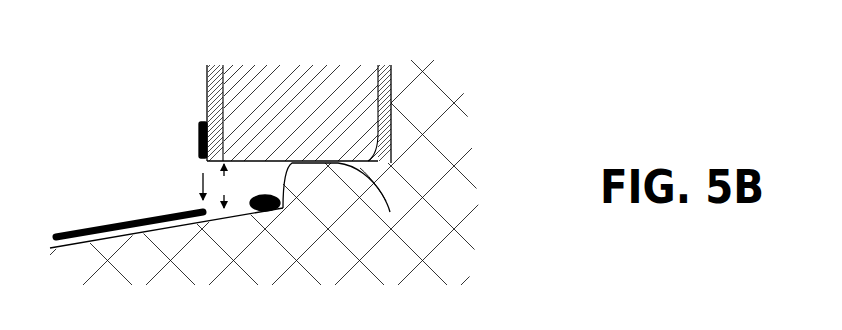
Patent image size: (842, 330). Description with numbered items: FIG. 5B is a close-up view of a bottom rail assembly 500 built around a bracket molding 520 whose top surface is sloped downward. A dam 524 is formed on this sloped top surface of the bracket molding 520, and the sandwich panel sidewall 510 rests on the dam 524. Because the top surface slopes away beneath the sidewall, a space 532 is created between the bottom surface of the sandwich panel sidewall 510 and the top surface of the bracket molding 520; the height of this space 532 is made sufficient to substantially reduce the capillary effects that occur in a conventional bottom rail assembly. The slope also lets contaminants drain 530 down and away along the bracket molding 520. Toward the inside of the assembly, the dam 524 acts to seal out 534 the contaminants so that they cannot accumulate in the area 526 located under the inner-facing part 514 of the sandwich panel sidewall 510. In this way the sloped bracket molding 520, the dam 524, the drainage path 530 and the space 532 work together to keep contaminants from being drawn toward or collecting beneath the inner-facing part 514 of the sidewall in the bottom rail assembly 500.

The bottom rail assembly 500 is at (361, 91).
The sandwich panel sidewall 510 is at (172, 100).
The inner-facing part of the sandwich panel sidewall 514 is at (424, 102).
The bracket molding 520 is at (379, 175).
The dam 524 is at (320, 187).
The area under the inner-facing part 526 is at (412, 199).
The drain of contaminants 530 is at (146, 210).
The space 532 is at (232, 186).
The sealing out of contaminants 534 is at (314, 100).